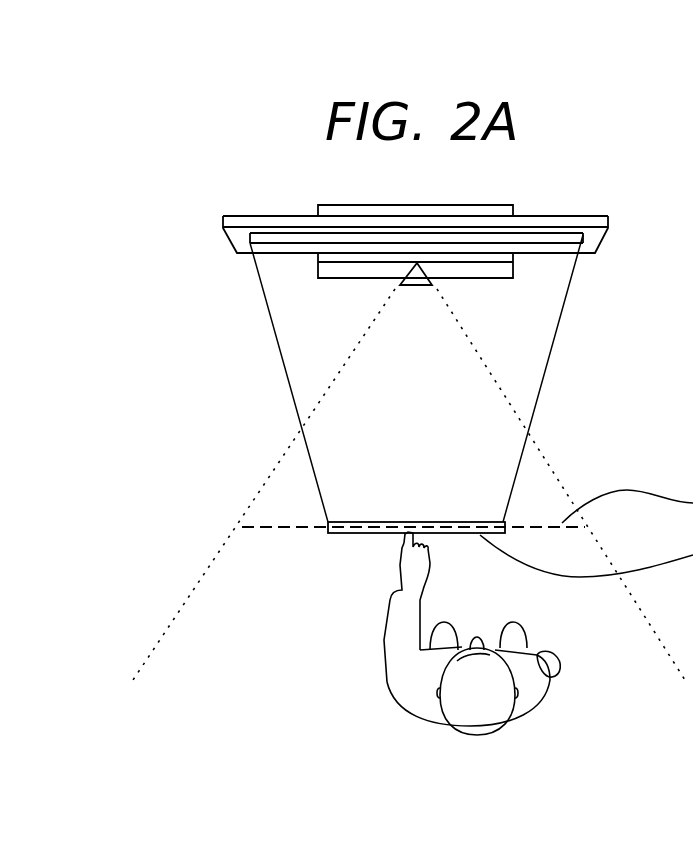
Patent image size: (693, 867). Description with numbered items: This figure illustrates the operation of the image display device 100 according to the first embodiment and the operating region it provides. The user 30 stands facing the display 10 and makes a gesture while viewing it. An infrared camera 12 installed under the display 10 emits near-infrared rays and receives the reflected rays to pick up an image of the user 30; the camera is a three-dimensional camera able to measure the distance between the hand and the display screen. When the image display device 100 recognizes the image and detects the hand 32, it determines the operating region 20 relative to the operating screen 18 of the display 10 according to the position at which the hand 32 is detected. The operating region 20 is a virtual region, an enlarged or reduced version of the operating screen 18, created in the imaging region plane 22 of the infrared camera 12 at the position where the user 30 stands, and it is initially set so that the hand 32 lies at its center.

The image display device 100 is at (392, 442).
The display 10 is at (597, 234).
The operating screen 18 is at (550, 240).
The infrared camera 12 is at (415, 286).
The operating region 20 is at (345, 534).
The imaging region plane 22 is at (282, 529).
The user 30 is at (387, 676).
The hand 32 is at (428, 543).